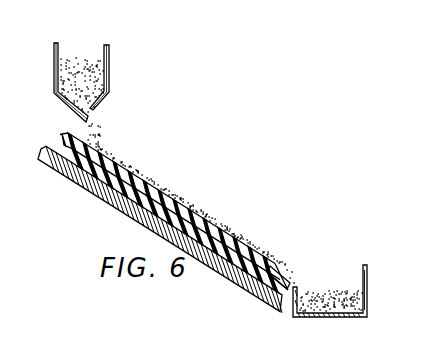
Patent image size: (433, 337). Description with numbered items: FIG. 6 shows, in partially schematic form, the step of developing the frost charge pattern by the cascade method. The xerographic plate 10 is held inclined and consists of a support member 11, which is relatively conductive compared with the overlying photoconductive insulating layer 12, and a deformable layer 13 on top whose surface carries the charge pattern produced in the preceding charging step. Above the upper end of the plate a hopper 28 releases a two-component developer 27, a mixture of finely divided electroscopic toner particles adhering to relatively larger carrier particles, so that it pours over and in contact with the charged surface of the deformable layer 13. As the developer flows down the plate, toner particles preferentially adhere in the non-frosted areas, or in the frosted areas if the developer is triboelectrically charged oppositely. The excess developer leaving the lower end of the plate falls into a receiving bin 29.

The xerographic plate 10 is at (56, 181).
The support member 11 is at (39, 150).
The photoconductive insulating layer 12 is at (61, 150).
The deformable layer 13 is at (87, 145).
The developer 27 is at (82, 58).
The hopper 28 is at (110, 49).
The receiving bin 29 is at (323, 290).